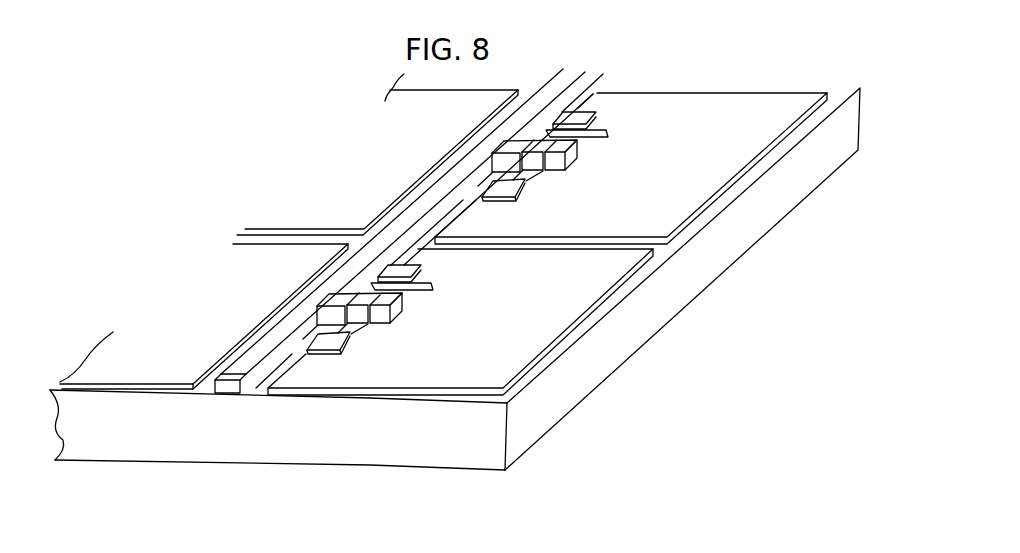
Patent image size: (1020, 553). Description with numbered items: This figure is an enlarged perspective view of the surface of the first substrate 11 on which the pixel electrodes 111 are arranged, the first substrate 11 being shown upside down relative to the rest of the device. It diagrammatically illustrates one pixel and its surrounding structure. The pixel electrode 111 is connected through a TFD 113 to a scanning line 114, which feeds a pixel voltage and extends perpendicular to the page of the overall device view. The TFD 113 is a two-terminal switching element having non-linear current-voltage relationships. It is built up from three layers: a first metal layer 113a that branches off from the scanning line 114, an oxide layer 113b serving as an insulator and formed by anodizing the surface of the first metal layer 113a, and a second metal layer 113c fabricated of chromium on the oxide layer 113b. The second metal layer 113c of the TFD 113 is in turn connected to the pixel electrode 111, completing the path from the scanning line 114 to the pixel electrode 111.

The first substrate 11 is at (672, 306).
The pixel electrode 111 is at (723, 175).
The TFD 113 is at (519, 239).
The first metal layer 113a is at (403, 312).
The oxide layer 113b is at (445, 275).
The second metal layer 113c is at (372, 332).
The scanning line 114 is at (220, 393).